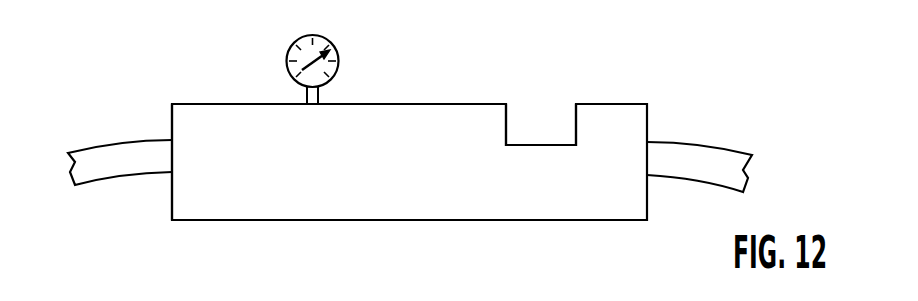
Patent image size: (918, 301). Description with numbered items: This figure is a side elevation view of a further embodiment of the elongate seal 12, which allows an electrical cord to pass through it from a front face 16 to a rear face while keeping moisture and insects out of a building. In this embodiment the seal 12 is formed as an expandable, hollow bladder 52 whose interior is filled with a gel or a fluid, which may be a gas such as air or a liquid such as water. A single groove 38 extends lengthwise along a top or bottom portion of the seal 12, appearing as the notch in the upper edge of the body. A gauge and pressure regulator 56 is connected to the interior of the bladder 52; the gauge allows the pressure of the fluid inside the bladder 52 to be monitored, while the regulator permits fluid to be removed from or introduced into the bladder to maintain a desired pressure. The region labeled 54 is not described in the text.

The elongate seal 12 is at (562, 222).
The front face 16 is at (700, 143).
The groove 38 is at (532, 118).
The expandable hollow bladder 52 is at (234, 103).
The chamber 54 is at (205, 140).
The gauge and pressure regulator 56 is at (333, 43).